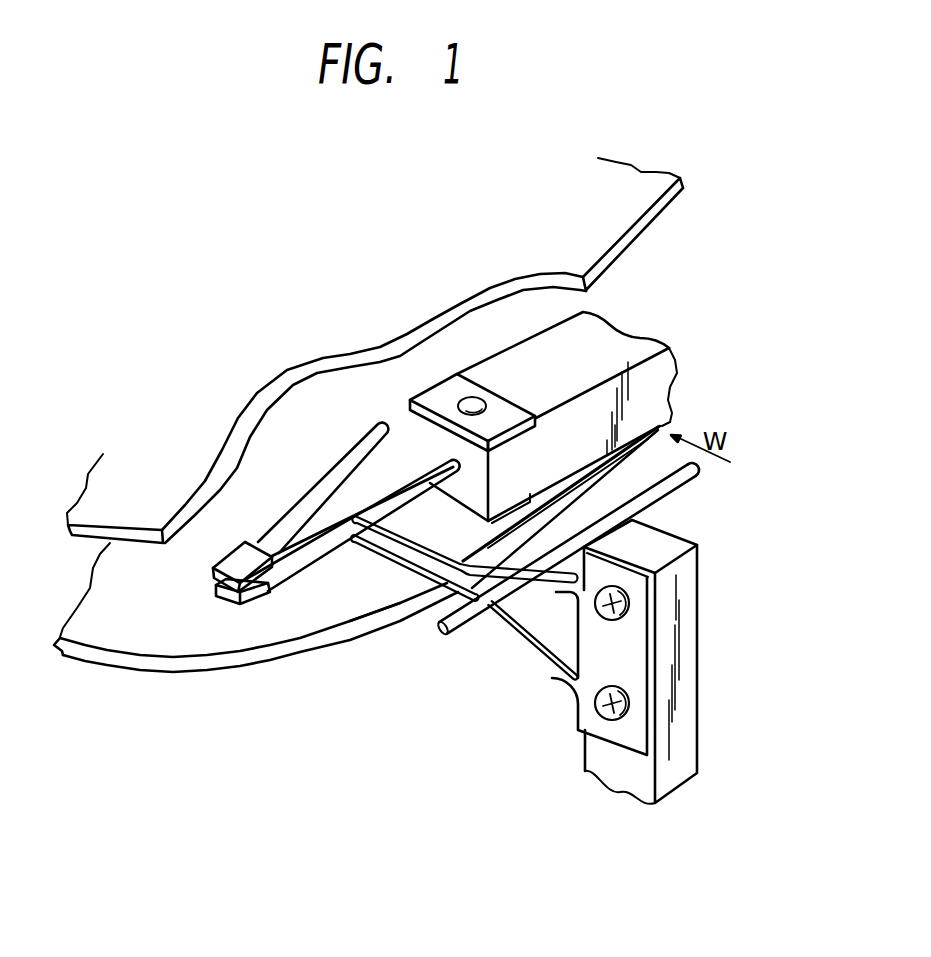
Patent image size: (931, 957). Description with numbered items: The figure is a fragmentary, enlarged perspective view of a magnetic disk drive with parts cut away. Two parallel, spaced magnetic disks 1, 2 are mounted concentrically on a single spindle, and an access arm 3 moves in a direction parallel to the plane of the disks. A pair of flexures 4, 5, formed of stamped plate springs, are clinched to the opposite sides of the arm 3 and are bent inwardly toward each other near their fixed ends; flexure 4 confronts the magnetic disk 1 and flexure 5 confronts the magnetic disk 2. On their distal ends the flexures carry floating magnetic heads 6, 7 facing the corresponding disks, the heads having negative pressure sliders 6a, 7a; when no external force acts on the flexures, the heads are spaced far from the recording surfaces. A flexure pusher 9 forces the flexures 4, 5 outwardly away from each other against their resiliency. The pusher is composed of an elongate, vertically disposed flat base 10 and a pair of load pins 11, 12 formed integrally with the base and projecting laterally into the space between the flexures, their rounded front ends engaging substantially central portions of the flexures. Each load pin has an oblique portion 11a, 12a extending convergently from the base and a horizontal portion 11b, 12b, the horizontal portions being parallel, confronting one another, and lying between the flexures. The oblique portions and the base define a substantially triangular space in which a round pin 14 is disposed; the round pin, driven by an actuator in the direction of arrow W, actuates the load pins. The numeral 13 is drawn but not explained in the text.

The magnetic disk 1 is at (92, 520).
The magnetic disk 2 is at (103, 658).
The arm 3 is at (617, 334).
The flexure 4 is at (347, 468).
The flexure 5 is at (330, 556).
The floating magnetic head 6 is at (222, 520).
The negative pressure slider 6a is at (221, 559).
The floating magnetic head 7 is at (222, 642).
The negative pressure slider 7a is at (253, 600).
The flexure pusher 9 is at (578, 736).
The flat base 10 is at (640, 680).
The load pin 11 is at (499, 594).
The oblique portion 11a is at (543, 567).
The horizontal portion 11b is at (407, 537).
The load pin 12 is at (464, 666).
The oblique portion 12a is at (497, 627).
The horizontal portion 12b is at (392, 622).
The spring holder 13 is at (537, 612).
The round pin 14 is at (594, 575).